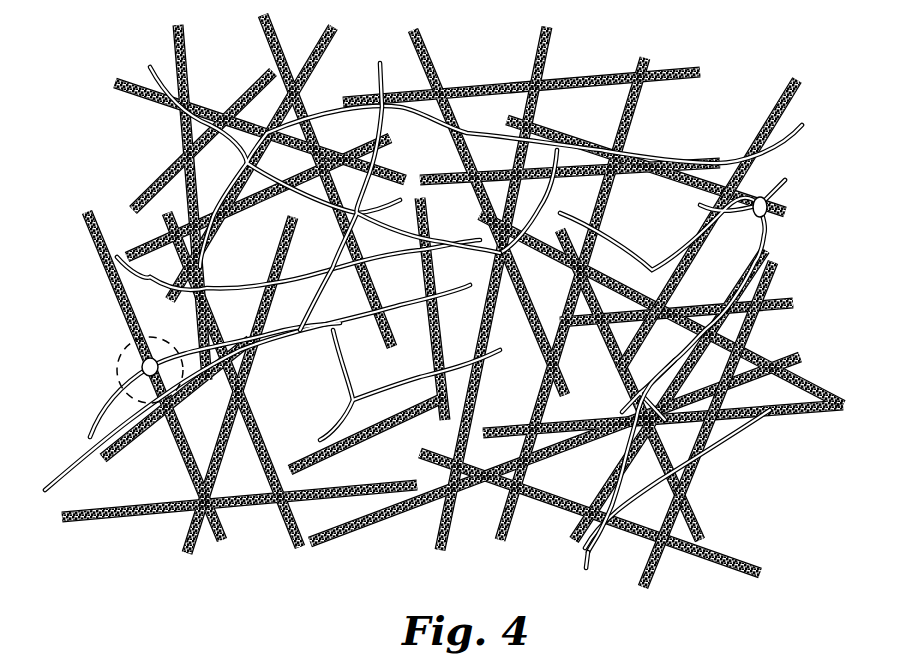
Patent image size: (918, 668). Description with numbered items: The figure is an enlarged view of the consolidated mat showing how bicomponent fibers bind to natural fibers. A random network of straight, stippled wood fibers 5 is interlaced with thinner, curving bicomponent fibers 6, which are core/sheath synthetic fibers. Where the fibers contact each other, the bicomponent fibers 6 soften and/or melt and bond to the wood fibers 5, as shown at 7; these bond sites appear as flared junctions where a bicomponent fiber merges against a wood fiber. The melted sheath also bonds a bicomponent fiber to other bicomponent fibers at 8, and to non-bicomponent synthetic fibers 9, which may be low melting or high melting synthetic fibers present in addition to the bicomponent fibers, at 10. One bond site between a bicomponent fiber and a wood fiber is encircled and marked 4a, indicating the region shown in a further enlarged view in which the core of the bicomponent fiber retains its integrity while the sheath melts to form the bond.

The wood fibers 5 is at (790, 80).
The bicomponent fibers 6 is at (768, 245).
The bond to wood fibers 7 is at (775, 200).
The bond to other bicomponent fibers 8 is at (385, 210).
The non-bicomponent synthetic fibers 9 is at (700, 450).
The bond to non-bicomponent synthetic fibers 10 is at (608, 520).
The enlarged view of a bond site 4a is at (148, 403).